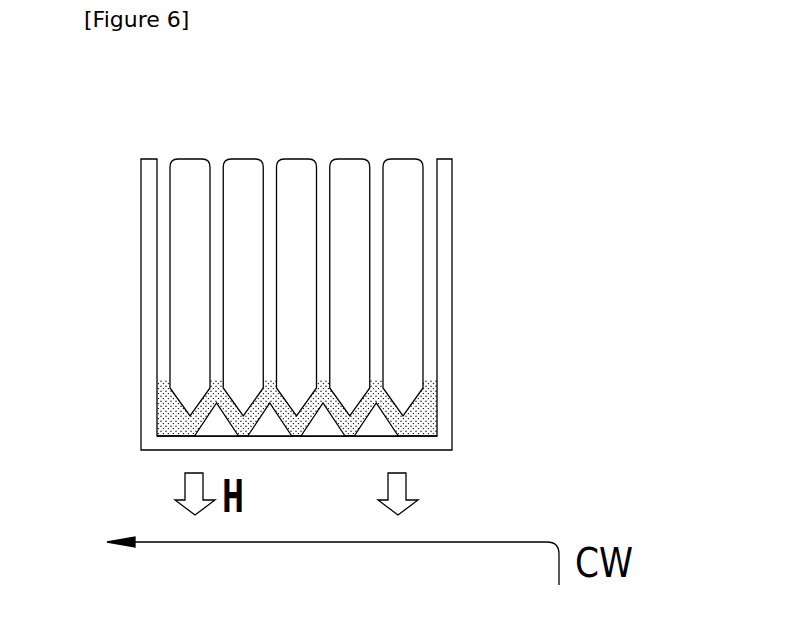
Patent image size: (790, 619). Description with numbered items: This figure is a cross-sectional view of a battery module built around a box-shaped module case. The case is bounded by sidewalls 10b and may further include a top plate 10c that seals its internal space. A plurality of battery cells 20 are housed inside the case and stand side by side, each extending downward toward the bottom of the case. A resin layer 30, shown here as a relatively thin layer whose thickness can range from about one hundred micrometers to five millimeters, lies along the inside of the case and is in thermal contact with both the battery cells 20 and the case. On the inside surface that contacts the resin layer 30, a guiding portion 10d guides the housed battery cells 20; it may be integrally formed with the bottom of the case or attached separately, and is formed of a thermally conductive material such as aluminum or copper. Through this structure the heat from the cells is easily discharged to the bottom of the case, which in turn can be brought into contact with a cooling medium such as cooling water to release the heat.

The battery cell 20 is at (241, 158).
The sidewall 10b is at (452, 281).
The top plate 10c is at (296, 450).
The guiding portion 10d is at (390, 425).
The resin layer 30 is at (168, 416).